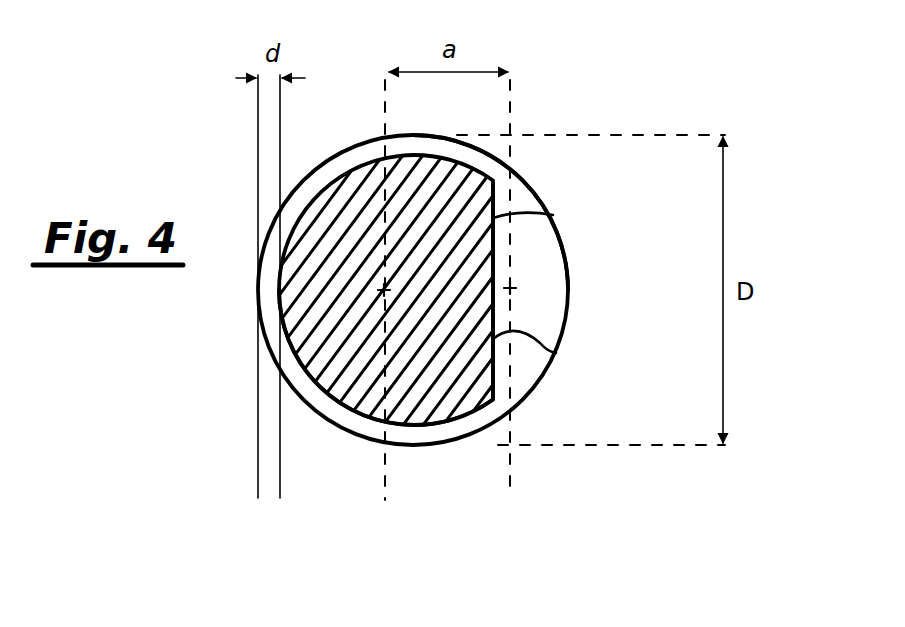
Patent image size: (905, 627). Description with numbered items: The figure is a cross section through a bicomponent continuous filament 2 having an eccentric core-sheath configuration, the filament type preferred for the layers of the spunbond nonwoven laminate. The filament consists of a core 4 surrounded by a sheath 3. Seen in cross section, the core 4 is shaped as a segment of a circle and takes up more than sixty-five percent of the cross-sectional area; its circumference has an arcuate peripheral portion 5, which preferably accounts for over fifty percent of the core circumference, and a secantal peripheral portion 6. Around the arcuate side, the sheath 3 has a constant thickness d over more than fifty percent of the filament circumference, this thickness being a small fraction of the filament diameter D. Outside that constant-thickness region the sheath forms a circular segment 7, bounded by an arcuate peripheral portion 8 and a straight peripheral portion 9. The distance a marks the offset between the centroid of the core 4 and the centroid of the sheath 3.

The continuous filament 2 is at (550, 390).
The sheath 3 is at (432, 432).
The core 4 is at (410, 280).
The arcuate peripheral portion 5 is at (324, 409).
The secantal peripheral portion 6 is at (556, 353).
The circular segment 7 is at (538, 306).
The arcuate peripheral portion 8 is at (562, 238).
The straight peripheral portion 9 is at (553, 215).